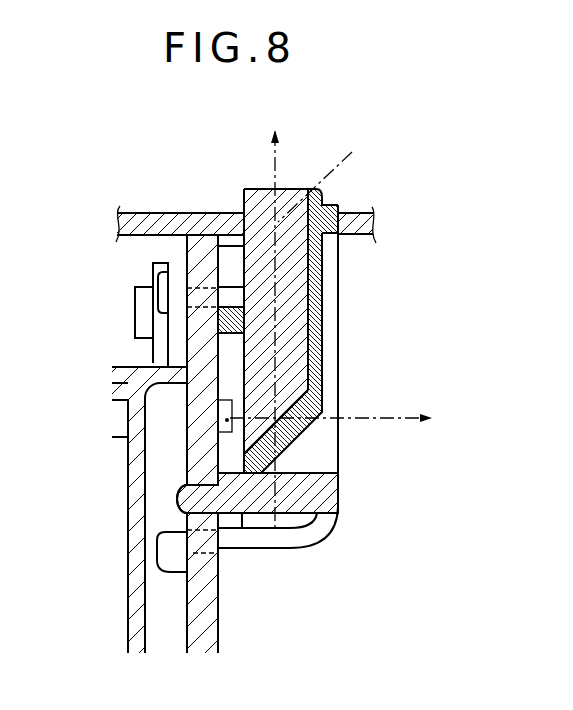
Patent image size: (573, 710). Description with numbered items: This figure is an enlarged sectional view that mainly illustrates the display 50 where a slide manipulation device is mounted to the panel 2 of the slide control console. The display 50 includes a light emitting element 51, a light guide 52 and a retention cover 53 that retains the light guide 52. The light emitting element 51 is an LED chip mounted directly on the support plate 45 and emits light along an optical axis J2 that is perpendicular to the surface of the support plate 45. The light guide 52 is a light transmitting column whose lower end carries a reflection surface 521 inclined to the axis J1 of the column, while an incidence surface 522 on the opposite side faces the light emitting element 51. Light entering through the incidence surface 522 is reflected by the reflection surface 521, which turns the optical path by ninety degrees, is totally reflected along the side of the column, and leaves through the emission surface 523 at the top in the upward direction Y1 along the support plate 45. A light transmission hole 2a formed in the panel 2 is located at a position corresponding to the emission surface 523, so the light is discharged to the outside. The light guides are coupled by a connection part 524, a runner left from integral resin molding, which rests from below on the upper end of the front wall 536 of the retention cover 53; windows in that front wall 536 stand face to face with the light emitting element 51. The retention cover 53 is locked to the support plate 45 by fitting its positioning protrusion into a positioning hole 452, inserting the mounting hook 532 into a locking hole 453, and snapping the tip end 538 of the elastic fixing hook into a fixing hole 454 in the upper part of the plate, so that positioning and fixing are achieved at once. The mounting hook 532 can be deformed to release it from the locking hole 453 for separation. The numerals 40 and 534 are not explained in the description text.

The panel 2 is at (143, 214).
The light transmission hole 2a is at (236, 213).
The housing 40 is at (311, 568).
The support plate 45 is at (219, 633).
The positioning hole 452 is at (183, 482).
The locking hole 453 is at (207, 540).
The fixing hole 454 is at (188, 247).
The display 50 is at (352, 189).
The light emitting element 51 is at (320, 347).
The light guide 52 is at (257, 172).
The reflection surface 521 is at (293, 398).
The incidence surface 522 is at (245, 514).
The emission surface 523 is at (300, 186).
The connection part 524 is at (231, 298).
The retention cover 53 is at (321, 318).
The mounting hook 532 is at (155, 550).
The rounded flange 534 is at (178, 498).
The front wall 536 is at (234, 318).
The tip end 538 is at (135, 287).
The upward direction Y1 is at (285, 314).
The axis of the column J1 is at (330, 179).
The optical axis J2 is at (346, 415).